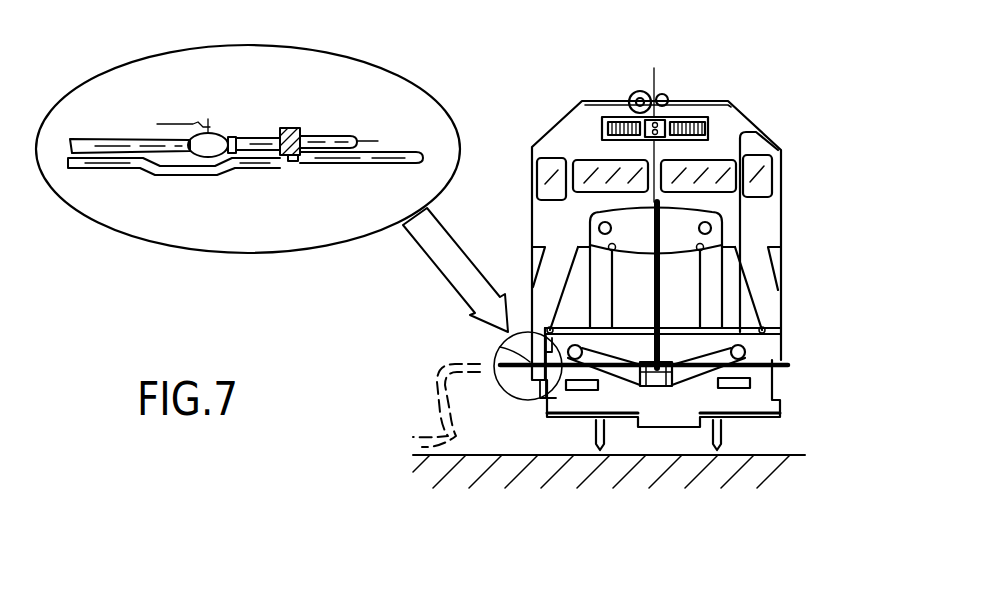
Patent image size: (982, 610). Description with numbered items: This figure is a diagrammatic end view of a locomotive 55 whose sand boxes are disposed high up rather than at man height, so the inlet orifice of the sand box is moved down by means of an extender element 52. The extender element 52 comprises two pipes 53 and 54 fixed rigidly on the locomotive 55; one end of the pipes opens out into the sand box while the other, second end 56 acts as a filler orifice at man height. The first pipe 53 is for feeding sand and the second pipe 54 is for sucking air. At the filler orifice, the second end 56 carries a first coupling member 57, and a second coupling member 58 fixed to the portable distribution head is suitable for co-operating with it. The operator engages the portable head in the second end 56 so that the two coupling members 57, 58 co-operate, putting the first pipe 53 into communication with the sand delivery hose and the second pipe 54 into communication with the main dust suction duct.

The extender element 52 is at (660, 279).
The first pipe 53 is at (644, 451).
The second pipe 54 is at (580, 372).
The locomotive 55 is at (755, 117).
The second end 56 is at (490, 349).
The first coupling member 57 is at (640, 451).
The second coupling member 58 is at (280, 128).